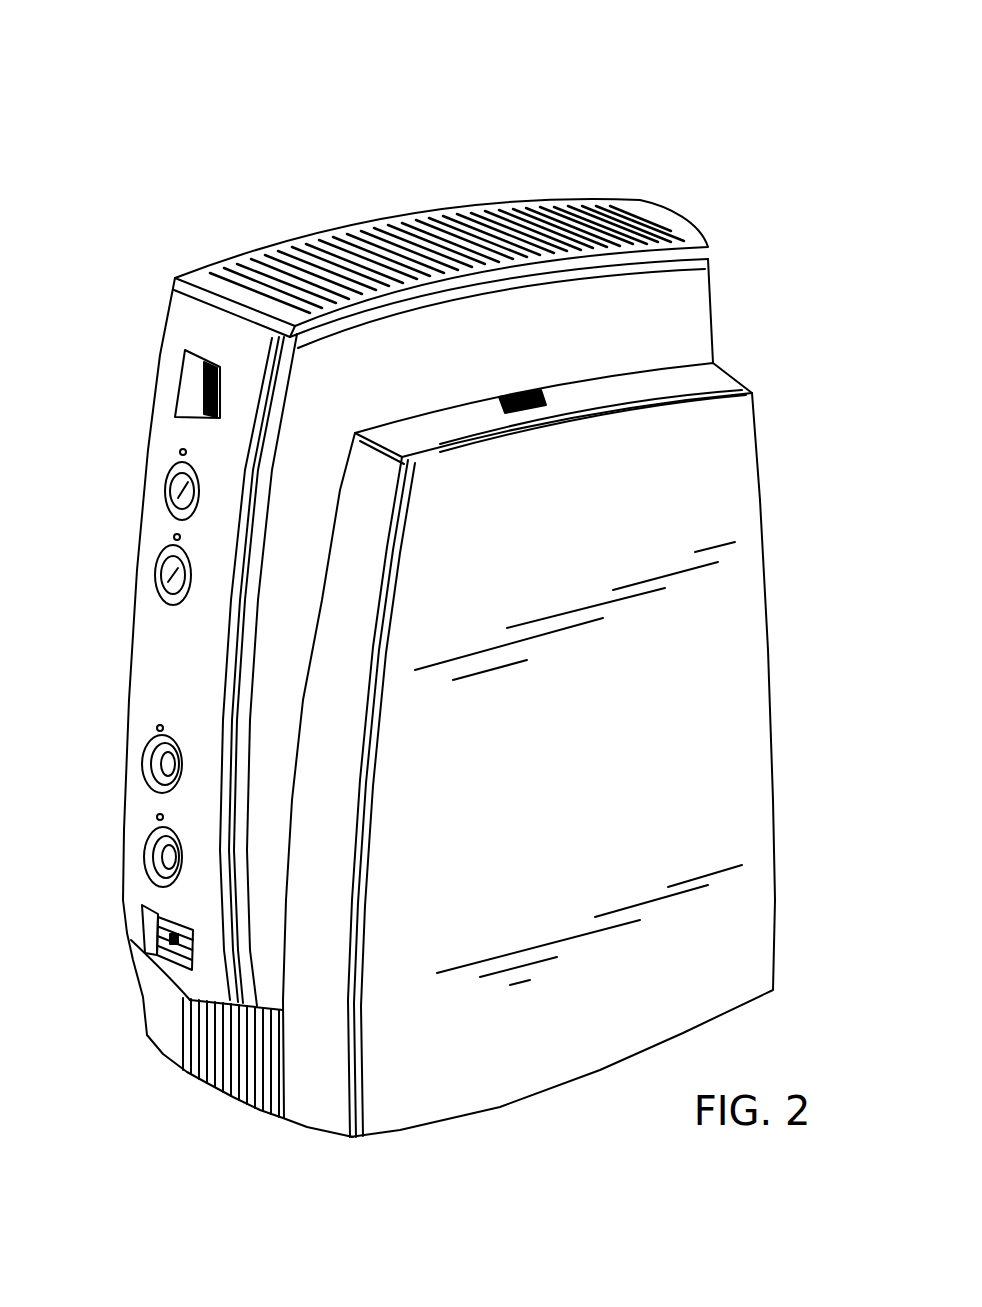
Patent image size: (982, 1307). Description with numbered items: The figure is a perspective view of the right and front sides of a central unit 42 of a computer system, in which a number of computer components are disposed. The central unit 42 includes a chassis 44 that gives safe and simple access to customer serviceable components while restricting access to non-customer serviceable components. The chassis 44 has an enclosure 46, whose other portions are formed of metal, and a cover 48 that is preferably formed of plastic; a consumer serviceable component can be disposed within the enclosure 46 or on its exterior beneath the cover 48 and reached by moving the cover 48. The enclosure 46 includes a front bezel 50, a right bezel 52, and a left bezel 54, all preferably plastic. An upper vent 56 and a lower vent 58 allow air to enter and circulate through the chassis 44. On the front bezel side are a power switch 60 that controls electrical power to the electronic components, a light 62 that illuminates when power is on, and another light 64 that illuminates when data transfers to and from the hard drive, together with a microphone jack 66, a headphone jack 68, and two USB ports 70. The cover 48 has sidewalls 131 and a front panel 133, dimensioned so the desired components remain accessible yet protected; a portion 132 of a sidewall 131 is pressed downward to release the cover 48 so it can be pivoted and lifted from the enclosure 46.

The central unit 42 is at (472, 97).
The chassis 44 is at (735, 377).
The enclosure 46 is at (717, 273).
The cover 48 is at (763, 462).
The front bezel 50 is at (168, 297).
The right bezel 52 is at (688, 218).
The left bezel 54 is at (632, 192).
The upper vent 56 is at (513, 218).
The lower vent 58 is at (233, 1090).
The power switch 60 is at (193, 393).
The light 62 is at (165, 492).
The light 64 is at (157, 576).
The microphone jack 66 is at (143, 775).
The headphone jack 68 is at (143, 867).
The uniform serial bus (USB) ports 70 is at (150, 945).
The sidewall 131 is at (320, 1100).
The portion of sidewall 132 is at (521, 395).
The front panel 133 is at (755, 797).